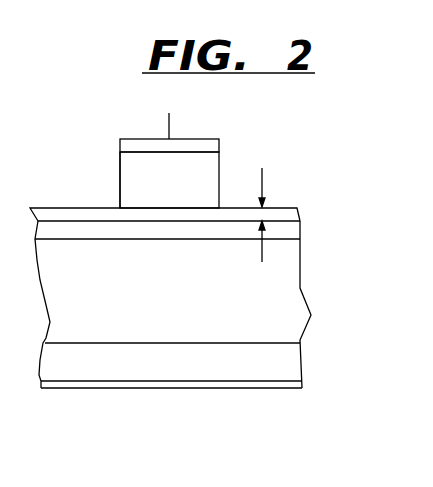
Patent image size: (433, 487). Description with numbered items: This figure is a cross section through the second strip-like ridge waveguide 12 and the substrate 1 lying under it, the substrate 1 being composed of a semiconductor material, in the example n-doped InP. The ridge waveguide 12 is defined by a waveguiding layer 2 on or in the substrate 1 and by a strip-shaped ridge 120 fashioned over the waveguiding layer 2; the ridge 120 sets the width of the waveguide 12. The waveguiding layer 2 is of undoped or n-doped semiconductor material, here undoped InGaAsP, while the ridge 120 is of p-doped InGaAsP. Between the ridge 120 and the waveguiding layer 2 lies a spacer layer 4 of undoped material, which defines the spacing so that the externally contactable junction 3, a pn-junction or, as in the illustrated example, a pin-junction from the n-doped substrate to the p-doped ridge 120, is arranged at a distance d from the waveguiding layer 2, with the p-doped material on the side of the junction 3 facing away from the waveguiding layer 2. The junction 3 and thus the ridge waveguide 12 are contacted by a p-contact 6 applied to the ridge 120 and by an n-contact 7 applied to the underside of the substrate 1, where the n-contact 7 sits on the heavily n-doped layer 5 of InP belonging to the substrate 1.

The substrate 1 is at (300, 278).
The waveguiding layer 2 is at (288, 233).
The pn-junction or pin-junction 3 is at (218, 226).
The spacer layer 4 is at (296, 210).
The n+-doped layer 5 is at (290, 355).
The p-contact 6 is at (147, 139).
The n-contact 7 is at (282, 388).
The second strip-like ridge waveguide 12 is at (120, 194).
The strip-shaped ridge 120 is at (120, 158).
The distance d is at (263, 215).